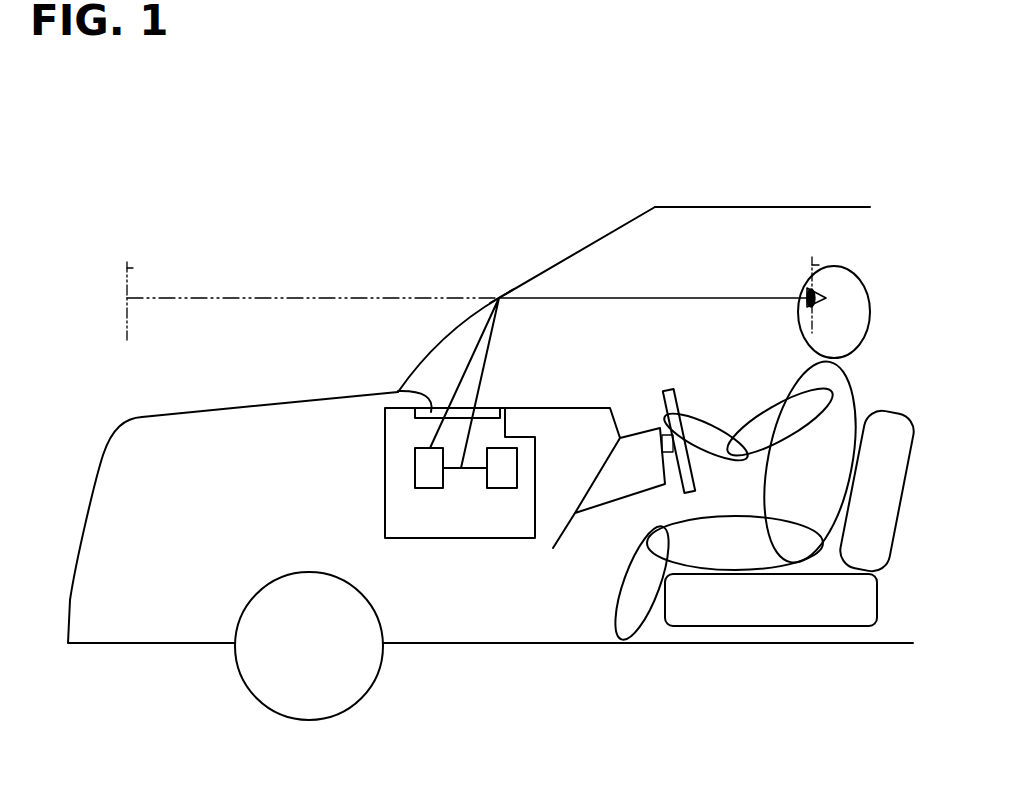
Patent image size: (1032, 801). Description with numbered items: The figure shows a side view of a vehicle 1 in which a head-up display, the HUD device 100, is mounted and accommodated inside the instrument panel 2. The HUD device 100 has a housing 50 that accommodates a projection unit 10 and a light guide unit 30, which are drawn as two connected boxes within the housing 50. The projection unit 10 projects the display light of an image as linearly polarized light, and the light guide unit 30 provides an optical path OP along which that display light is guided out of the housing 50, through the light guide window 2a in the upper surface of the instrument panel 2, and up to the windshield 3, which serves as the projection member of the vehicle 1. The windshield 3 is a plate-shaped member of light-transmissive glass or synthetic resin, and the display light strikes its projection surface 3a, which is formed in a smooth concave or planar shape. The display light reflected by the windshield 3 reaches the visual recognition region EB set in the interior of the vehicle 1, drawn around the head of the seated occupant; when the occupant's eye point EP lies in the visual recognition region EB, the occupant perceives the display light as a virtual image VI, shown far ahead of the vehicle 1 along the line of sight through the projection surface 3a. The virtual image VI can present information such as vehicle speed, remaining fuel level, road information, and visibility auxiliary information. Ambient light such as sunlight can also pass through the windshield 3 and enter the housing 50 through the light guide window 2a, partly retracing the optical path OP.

The vehicle 1 is at (840, 207).
The instrument panel 2 is at (573, 408).
The light guide window 2a is at (410, 377).
The windshield 3 is at (572, 250).
The projection surface 3a is at (514, 290).
The projection unit 10 is at (517, 468).
The light guide unit 30 is at (423, 420).
The housing 50 is at (385, 527).
The HUD device 100 is at (458, 461).
The optical path OP is at (463, 392).
The eye point EP is at (806, 294).
The visual recognition region EB is at (812, 262).
The virtual image VI is at (128, 270).